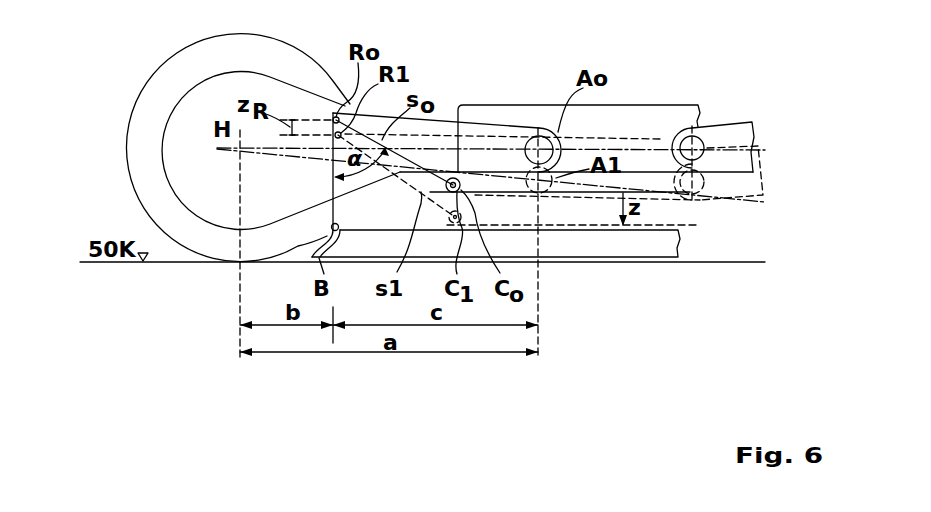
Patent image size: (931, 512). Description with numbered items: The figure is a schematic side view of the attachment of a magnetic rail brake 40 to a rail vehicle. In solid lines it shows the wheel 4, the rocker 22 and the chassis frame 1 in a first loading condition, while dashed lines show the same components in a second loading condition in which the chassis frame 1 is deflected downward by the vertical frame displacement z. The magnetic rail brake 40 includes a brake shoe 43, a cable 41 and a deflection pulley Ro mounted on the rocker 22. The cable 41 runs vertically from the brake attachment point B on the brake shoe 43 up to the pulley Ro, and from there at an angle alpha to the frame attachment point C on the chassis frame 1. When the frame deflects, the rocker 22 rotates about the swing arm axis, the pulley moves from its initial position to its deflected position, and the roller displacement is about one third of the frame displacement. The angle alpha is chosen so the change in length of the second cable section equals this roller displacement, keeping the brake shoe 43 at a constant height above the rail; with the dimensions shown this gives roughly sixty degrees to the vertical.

The chassis frame 1 is at (648, 112).
The wheel 4 is at (178, 70).
The rocker 22 is at (180, 108).
The magnetic rail brake 40 is at (636, 296).
The cable 41 is at (433, 172).
The brake shoe 43 is at (642, 248).